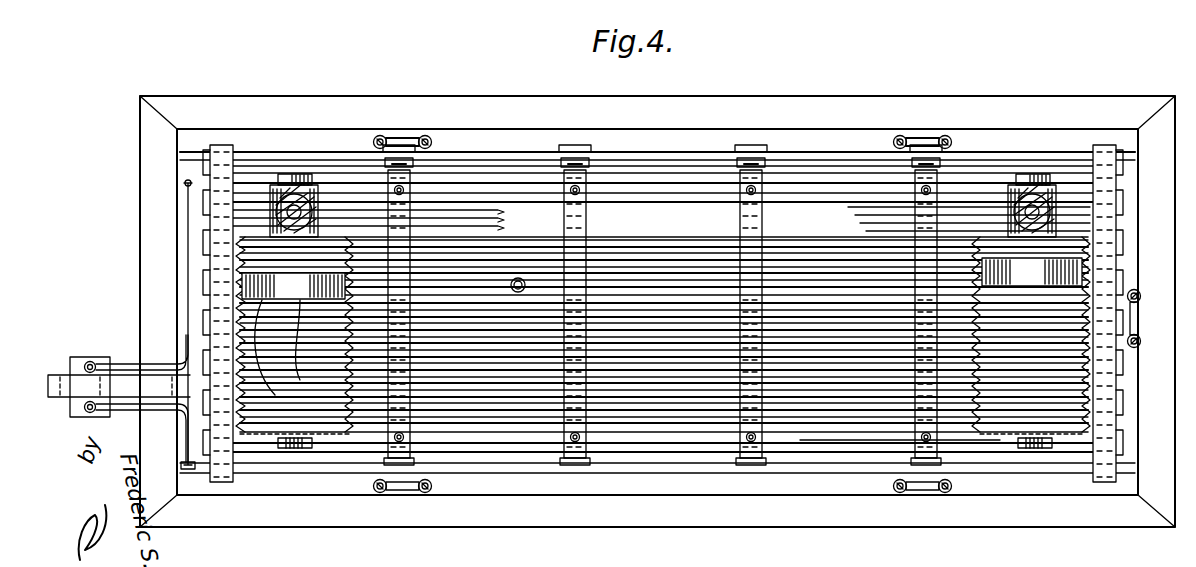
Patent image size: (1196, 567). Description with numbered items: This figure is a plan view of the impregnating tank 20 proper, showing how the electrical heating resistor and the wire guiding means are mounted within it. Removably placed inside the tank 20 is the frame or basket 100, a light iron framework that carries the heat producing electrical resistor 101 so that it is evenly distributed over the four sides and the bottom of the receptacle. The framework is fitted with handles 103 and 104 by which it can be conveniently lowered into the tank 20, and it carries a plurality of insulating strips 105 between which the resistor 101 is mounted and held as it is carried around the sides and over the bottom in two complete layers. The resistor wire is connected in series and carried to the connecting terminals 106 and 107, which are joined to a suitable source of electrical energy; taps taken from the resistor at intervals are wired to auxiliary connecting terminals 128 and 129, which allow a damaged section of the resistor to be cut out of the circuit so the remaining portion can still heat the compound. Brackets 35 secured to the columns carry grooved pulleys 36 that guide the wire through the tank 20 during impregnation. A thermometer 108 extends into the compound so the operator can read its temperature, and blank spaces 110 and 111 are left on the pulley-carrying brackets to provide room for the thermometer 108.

The tank 20 is at (760, 130).
The bracket 35 is at (1065, 88).
The grooved pulley 36 is at (305, 390).
The frame or basket 100 is at (460, 145).
The electrical resistor 101 is at (505, 210).
The handle 103 is at (1103, 148).
The handle 104 is at (228, 146).
The insulating strip 105 is at (405, 445).
The connecting terminal 106 is at (90, 360).
The connecting terminal 107 is at (93, 413).
The thermometer 108 is at (522, 280).
The blank space 110 is at (242, 283).
The blank space 111 is at (1000, 270).
The auxiliary connecting terminal 128 is at (1160, 358).
The auxiliary connecting terminal 129 is at (1158, 268).